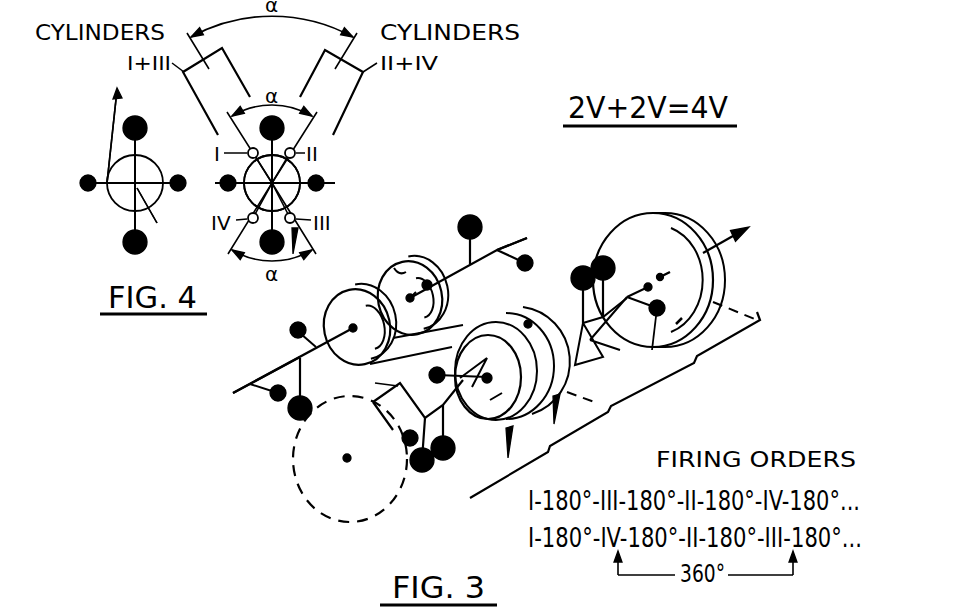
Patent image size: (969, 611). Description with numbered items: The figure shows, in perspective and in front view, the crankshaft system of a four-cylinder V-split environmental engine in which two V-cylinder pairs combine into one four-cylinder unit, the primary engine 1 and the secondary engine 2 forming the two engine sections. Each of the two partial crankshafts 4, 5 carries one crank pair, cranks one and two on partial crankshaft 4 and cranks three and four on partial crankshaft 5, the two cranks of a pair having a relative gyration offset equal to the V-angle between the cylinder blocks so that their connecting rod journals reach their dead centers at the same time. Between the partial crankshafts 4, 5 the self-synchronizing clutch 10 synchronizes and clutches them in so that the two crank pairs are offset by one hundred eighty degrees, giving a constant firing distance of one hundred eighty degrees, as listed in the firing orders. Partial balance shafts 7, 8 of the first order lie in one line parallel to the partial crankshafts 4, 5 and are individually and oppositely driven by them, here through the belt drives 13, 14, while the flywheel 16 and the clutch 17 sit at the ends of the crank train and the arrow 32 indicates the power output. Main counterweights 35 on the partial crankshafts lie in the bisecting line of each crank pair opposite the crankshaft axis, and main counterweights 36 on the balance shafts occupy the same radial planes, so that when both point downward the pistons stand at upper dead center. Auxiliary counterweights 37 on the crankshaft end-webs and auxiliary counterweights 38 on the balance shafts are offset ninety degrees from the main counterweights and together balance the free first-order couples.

In FIG. 3, the primary engine 1 is at (537, 366).
In FIG. 3, the secondary engine 2 is at (615, 400).
In FIG. 4, the partial crankshaft 4 is at (296, 188).
In FIG. 3, the partial crankshaft 4 is at (628, 296).
In FIG. 4, the partial crankshaft 5 is at (296, 188).
In FIG. 3, the partial crankshaft 5 is at (393, 441).
In FIG. 4, the partial balance shaft 7 is at (163, 217).
In FIG. 3, the partial balance shaft 7 is at (493, 250).
In FIG. 4, the partial balance shaft 8 is at (163, 217).
In FIG. 3, the partial balance shaft 8 is at (293, 364).
In FIG. 3, the self-synchronizing clutch 10 is at (492, 318).
In FIG. 4, the first belt drive 13 is at (145, 133).
In FIG. 3, the first belt drive 13 is at (368, 283).
In FIG. 4, the second belt drive 14 is at (145, 133).
In FIG. 3, the second belt drive 14 is at (330, 312).
In FIG. 3, the flywheel 16 is at (676, 233).
In FIG. 3, the clutch 17 is at (318, 496).
In FIG. 3, the power output direction 32 is at (729, 250).
In FIG. 4, the main counterweights 35 is at (280, 117).
In FIG. 3, the main counterweights 35 is at (598, 258).
In FIG. 4, the main counterweights 36 is at (147, 128).
In FIG. 3, the main counterweights 36 is at (470, 216).
In FIG. 4, the auxiliary counterweights 37 is at (224, 189).
In FIG. 3, the auxiliary counterweights 37 is at (430, 375).
In FIG. 4, the auxiliary counterweights 38 is at (90, 193).
In FIG. 3, the auxiliary counterweights 38 is at (427, 280).